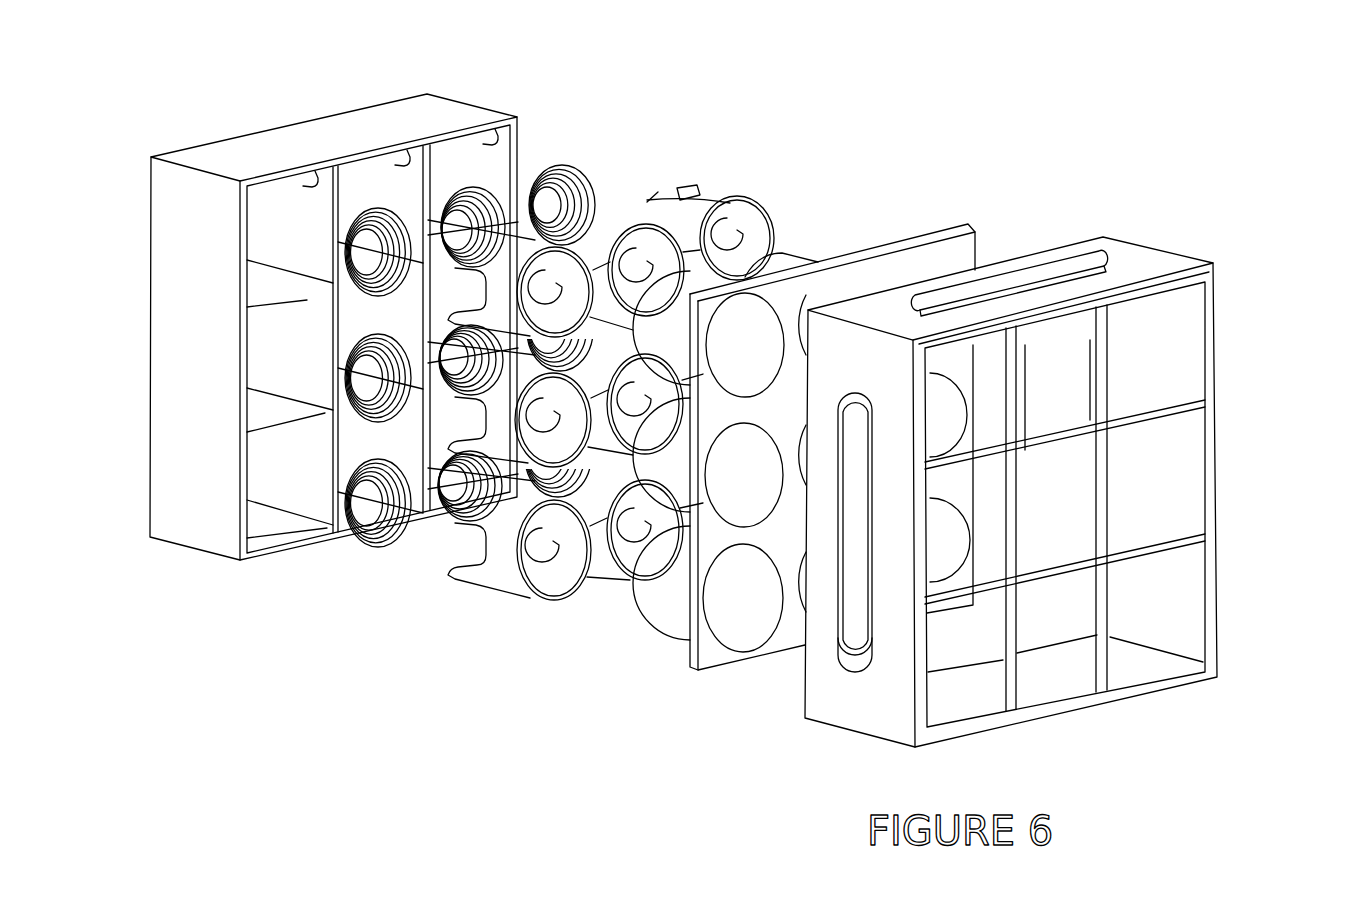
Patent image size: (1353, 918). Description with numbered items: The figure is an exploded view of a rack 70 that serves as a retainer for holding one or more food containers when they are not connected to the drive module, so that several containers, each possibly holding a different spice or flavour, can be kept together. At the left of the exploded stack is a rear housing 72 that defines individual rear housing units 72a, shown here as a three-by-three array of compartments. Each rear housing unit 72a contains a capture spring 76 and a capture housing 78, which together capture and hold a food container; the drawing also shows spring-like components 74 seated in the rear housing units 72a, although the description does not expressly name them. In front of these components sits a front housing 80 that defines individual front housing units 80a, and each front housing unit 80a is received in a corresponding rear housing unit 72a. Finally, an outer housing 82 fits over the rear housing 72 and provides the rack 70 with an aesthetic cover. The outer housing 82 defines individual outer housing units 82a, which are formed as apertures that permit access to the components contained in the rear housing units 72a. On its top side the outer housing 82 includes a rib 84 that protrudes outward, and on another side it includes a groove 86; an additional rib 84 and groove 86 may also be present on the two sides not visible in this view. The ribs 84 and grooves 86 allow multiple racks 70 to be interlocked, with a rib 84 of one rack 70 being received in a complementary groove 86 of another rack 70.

The rack 70 is at (1075, 106).
The rear housing 72 is at (455, 100).
The rear housing unit 72a is at (278, 203).
The conical contact springs 74 is at (314, 170).
The capture spring 76 is at (570, 164).
The capture housing 78 is at (720, 193).
The front housing 80 is at (937, 235).
The front housing unit 80a is at (852, 230).
The outer housing 82 is at (1175, 258).
The outer housing unit 82a is at (1185, 375).
The rib 84 is at (1052, 250).
The groove 86 is at (850, 637).